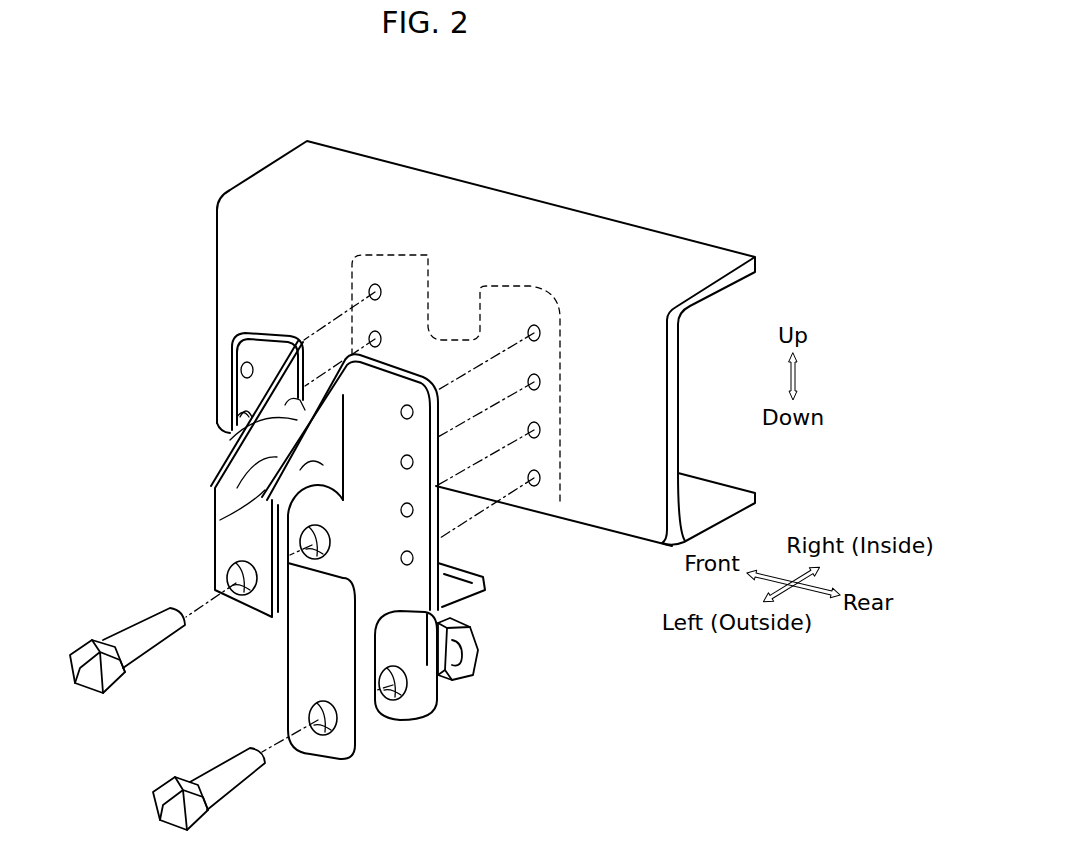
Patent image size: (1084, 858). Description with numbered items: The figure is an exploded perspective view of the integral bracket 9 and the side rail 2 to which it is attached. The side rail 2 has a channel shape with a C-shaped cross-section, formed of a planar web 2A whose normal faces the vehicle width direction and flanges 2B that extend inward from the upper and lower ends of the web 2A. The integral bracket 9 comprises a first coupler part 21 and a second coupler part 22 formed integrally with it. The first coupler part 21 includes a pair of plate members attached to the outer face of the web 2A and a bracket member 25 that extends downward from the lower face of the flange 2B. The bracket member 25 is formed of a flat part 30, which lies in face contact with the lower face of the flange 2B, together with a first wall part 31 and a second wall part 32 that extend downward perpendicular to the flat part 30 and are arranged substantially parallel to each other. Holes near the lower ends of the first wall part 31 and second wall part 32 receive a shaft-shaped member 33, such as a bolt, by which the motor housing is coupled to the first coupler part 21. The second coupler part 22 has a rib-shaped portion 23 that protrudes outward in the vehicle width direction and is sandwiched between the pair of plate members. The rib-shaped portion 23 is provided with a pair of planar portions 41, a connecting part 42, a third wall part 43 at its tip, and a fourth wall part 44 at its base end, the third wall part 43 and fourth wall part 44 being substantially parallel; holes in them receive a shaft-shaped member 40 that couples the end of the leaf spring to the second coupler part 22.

The side rail 2 is at (630, 181).
The web 2A is at (290, 292).
The flange 2B is at (502, 244).
The integral bracket 9 is at (345, 572).
The first coupler part 21 is at (353, 584).
The second coupler part 22 is at (218, 497).
The rib-shaped portion 23 is at (180, 513).
The bracket member 25 is at (523, 575).
The flat part 30 is at (480, 593).
The first wall part 31 is at (327, 760).
The second wall part 32 is at (438, 700).
The shaft-shaped member 33 is at (230, 797).
The shaft-shaped member 40 is at (138, 659).
The planar portion 41 is at (223, 487).
The connecting part 42 is at (243, 432).
The third wall part 43 is at (218, 573).
The fourth wall part 44 is at (312, 573).